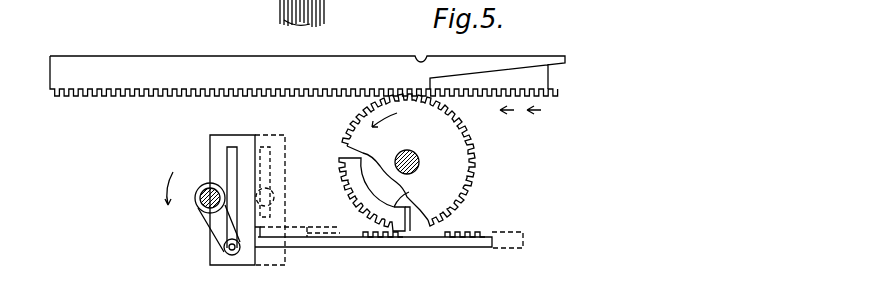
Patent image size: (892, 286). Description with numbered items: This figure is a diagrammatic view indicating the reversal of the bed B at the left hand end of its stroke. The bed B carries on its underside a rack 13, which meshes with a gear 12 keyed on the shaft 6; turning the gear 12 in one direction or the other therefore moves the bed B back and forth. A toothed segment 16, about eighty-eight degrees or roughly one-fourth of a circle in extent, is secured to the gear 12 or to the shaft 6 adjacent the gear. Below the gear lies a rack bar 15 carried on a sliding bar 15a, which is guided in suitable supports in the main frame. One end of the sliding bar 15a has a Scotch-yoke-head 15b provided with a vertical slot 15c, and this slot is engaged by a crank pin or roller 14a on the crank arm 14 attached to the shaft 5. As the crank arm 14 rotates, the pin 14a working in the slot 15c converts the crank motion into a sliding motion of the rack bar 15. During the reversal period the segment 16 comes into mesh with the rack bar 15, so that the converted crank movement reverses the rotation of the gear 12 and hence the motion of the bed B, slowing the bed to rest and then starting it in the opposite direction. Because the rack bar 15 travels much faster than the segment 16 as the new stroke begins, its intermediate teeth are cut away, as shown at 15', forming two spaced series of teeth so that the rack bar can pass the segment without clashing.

The rack 13 is at (186, 95).
The bed B is at (191, 58).
The Scotch-yoke-head 15b is at (215, 151).
The vertical slot 15c is at (236, 148).
The shaft 5 is at (204, 188).
The crank arm 14 is at (218, 232).
The crank pin or roller 14a is at (228, 249).
The sliding bar 15a is at (294, 243).
The rack bar 15 is at (389, 222).
The cut-away intermediate teeth 15' is at (425, 257).
The gear 12 is at (476, 154).
The shaft 6 is at (410, 152).
The toothed segment 16 is at (404, 193).